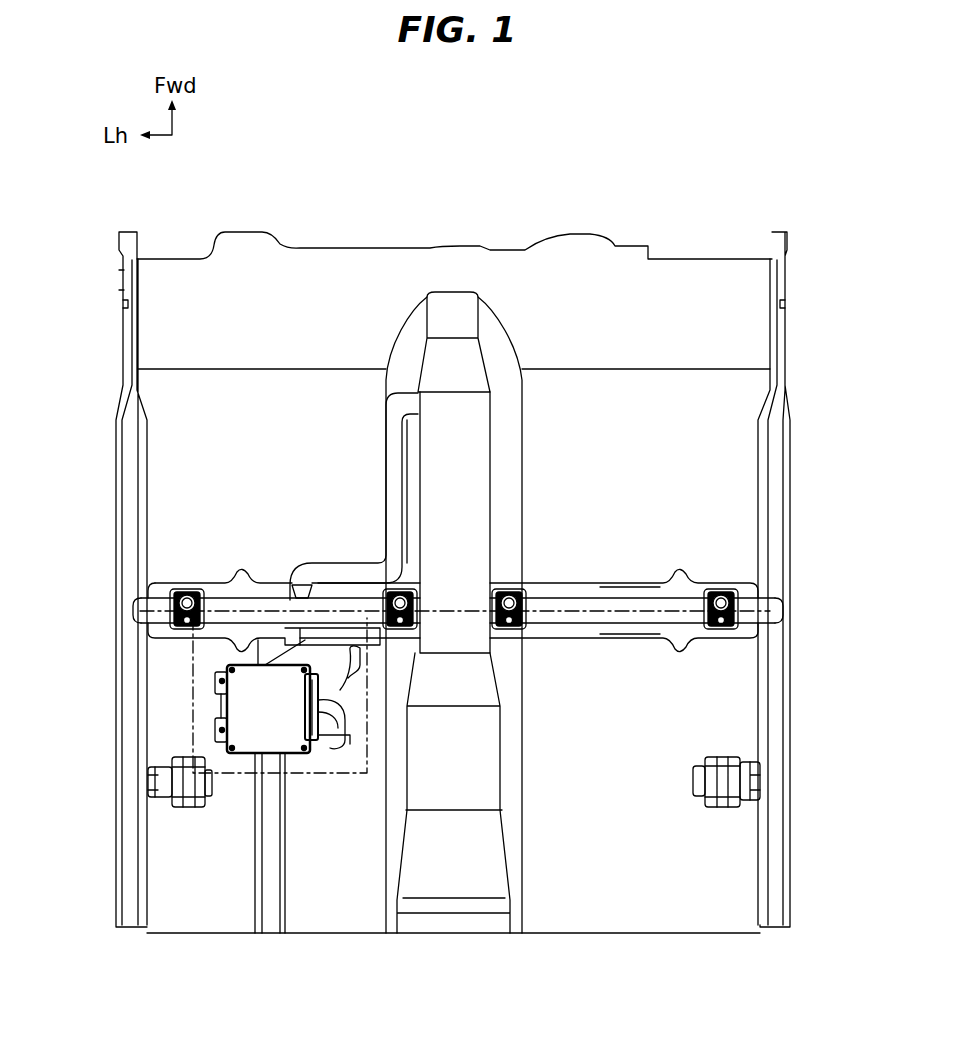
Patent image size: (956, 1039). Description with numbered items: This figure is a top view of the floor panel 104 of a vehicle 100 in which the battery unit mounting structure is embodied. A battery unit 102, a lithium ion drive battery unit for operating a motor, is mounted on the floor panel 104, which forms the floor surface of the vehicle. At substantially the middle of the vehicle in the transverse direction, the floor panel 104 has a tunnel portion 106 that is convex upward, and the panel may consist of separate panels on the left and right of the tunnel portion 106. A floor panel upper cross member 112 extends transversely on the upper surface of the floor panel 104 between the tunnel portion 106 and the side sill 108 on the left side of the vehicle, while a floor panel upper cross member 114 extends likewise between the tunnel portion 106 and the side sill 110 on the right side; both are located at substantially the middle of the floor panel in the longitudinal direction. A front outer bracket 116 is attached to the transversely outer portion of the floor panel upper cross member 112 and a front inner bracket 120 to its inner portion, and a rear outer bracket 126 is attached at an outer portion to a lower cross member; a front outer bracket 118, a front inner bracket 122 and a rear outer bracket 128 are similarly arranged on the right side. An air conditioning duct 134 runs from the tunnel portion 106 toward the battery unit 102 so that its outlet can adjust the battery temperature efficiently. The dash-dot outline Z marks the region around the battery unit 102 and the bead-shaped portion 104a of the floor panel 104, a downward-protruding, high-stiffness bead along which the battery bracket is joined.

The vehicle 100 is at (724, 198).
The battery unit 102 is at (285, 752).
The floor panel 104 is at (176, 449).
The bead-shaped portion 104a is at (270, 858).
The tunnel portion 106 is at (458, 452).
The side sill 108 is at (130, 505).
The side sill 110 is at (780, 517).
The floor panel upper cross member 112 is at (257, 586).
The floor panel upper cross member 114 is at (636, 588).
The front outer bracket 116 is at (190, 590).
The front outer bracket 118 is at (720, 590).
The front inner bracket 120 is at (380, 590).
The front inner bracket 122 is at (522, 592).
The rear outer bracket 126 is at (182, 788).
The rear outer bracket 128 is at (718, 788).
The air conditioning duct 134 is at (320, 562).
The region Z is at (190, 672).